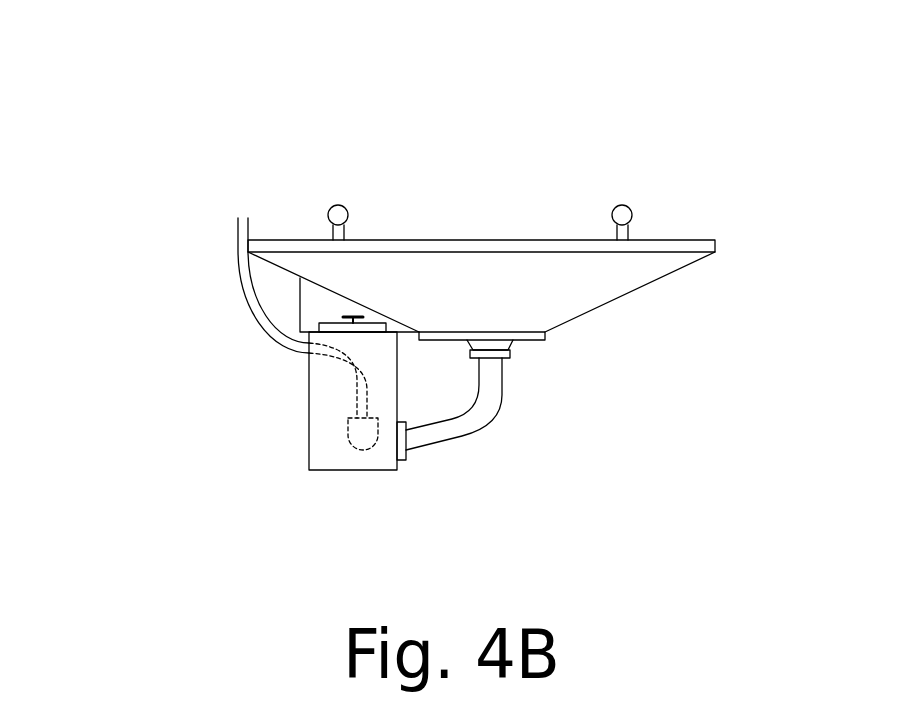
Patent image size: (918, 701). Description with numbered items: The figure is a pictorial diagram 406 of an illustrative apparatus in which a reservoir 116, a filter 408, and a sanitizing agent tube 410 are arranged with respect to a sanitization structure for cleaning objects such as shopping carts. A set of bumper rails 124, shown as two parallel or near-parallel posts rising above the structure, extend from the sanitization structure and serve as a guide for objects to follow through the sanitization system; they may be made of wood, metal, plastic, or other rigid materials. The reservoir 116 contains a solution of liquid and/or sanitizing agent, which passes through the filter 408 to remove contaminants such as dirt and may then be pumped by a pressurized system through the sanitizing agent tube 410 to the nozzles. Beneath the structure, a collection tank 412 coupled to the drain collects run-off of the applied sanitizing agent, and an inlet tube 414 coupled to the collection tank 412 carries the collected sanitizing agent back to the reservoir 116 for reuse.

The pictorial diagram 406 is at (115, 36).
The bumper rail 124 is at (338, 205).
The collection tank 412 is at (597, 308).
The inlet tube 414 is at (463, 435).
The reservoir 116 is at (333, 470).
The sanitizing agent tube 410 is at (243, 281).
The filter 408 is at (348, 428).